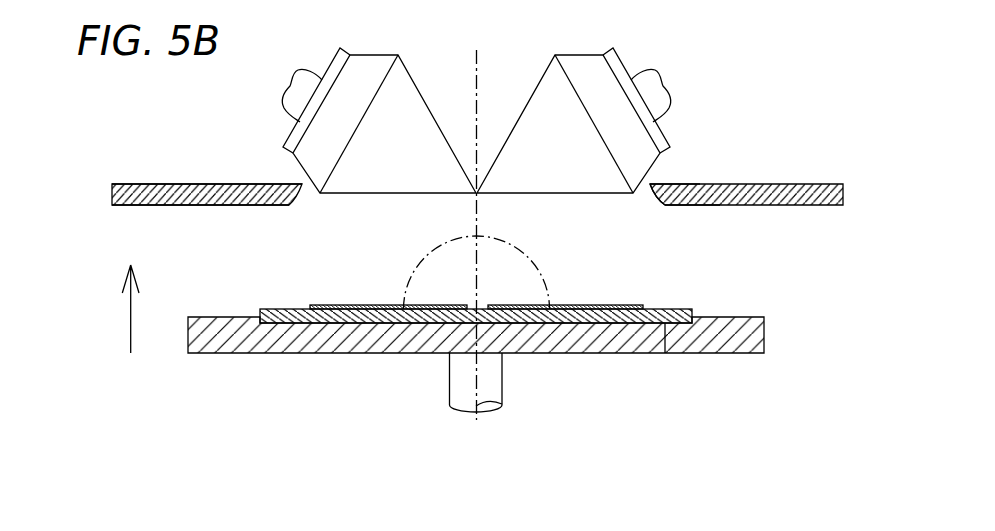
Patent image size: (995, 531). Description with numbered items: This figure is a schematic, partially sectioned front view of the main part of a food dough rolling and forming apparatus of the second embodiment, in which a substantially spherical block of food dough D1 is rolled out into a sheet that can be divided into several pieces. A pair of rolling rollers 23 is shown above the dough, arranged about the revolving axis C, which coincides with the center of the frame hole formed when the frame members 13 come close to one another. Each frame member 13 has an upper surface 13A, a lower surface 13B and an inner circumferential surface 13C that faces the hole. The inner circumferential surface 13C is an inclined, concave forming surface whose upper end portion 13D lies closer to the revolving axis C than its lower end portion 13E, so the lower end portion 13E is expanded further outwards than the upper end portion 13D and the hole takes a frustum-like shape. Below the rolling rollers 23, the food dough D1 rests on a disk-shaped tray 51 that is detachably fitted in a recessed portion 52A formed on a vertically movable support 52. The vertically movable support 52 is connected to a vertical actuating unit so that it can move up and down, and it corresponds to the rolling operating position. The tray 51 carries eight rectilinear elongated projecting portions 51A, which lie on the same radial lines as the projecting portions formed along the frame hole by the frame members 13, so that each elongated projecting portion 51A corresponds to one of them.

The frame member 13 is at (162, 186).
The upper surface of the frame member 13A is at (201, 184).
The lower surface of the frame member 13B is at (203, 206).
The inner circumferential surface 13C is at (658, 193).
The upper end portion of the inner circumferential surface 13D is at (651, 182).
The lower end portion of the inner circumferential surface 13E is at (662, 208).
The rolling roller 23 is at (433, 143).
The revolving axis C is at (478, 66).
The food dough D1 is at (424, 273).
The tray 51 is at (684, 311).
The elongated projecting portion 51A is at (357, 307).
The vertically movable support 52 is at (765, 348).
The recessed portion 52A is at (665, 353).